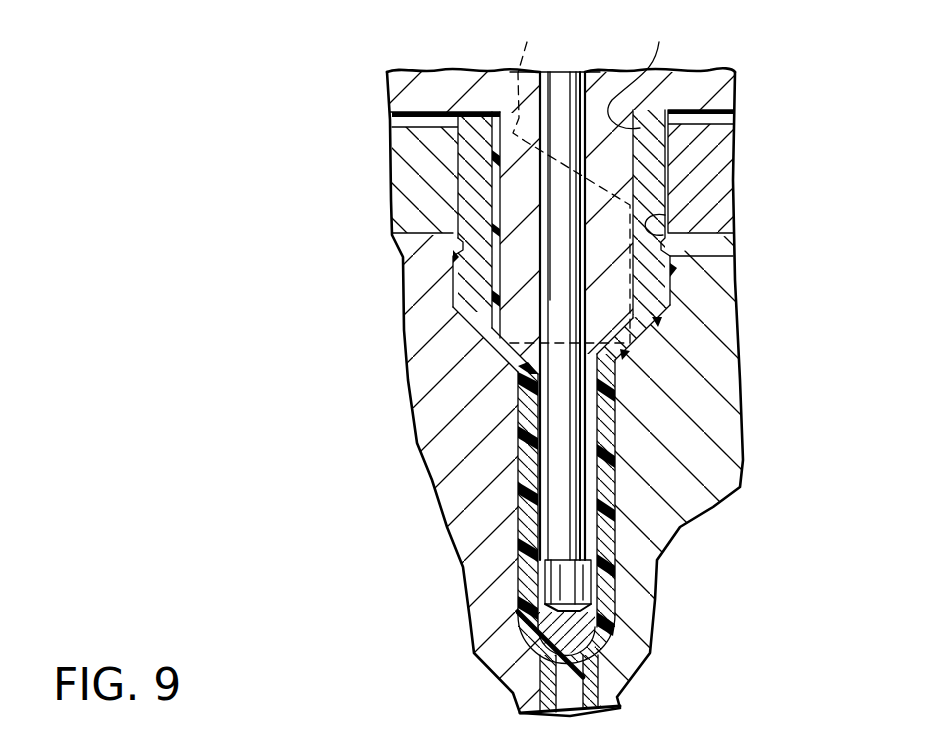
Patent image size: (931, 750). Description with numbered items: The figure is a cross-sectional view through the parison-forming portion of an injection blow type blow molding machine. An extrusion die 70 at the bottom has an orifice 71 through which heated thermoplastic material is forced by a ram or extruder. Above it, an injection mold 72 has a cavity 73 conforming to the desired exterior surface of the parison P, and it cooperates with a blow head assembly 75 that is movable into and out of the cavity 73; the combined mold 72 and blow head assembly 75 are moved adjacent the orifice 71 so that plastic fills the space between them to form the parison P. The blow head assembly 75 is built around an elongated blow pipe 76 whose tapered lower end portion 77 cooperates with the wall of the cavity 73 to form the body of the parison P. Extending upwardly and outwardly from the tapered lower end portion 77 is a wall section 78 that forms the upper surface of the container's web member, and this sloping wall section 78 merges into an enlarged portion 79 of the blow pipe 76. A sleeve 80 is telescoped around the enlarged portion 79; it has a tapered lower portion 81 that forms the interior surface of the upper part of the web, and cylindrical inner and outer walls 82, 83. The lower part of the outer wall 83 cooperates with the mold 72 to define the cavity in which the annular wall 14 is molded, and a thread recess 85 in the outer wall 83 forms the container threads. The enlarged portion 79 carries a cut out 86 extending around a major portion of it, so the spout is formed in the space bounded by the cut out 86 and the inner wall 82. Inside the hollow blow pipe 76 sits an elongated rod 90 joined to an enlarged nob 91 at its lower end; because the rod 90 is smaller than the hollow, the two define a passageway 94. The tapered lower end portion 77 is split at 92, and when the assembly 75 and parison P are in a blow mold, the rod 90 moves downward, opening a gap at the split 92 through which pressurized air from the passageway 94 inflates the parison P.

The annular wall 14 is at (673, 265).
The extrusion die 70 is at (505, 696).
The orifice 71 is at (613, 697).
The injection mold 72 is at (378, 373).
The cavity 73 is at (520, 477).
The blow head assembly 75 is at (497, 52).
The blow pipe 76 is at (470, 100).
The tapered lower end portion 77 is at (540, 423).
The wall section 78 is at (640, 347).
The enlarged portion 79 is at (635, 290).
The sleeve 80 is at (458, 160).
The tapered lower portion 81 is at (470, 325).
The inner wall 82 is at (642, 72).
The outer wall 83 is at (663, 157).
The thread recess 85 is at (665, 215).
The cut out 86 is at (328, 213).
The elongated rod 90 is at (562, 130).
The enlarged nob 91 is at (567, 580).
The split 92 is at (537, 557).
The passageway 94 is at (583, 72).
The parison P is at (665, 533).